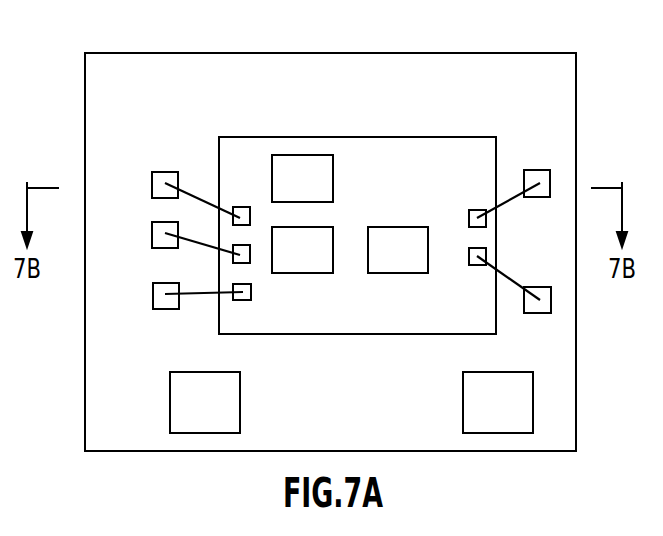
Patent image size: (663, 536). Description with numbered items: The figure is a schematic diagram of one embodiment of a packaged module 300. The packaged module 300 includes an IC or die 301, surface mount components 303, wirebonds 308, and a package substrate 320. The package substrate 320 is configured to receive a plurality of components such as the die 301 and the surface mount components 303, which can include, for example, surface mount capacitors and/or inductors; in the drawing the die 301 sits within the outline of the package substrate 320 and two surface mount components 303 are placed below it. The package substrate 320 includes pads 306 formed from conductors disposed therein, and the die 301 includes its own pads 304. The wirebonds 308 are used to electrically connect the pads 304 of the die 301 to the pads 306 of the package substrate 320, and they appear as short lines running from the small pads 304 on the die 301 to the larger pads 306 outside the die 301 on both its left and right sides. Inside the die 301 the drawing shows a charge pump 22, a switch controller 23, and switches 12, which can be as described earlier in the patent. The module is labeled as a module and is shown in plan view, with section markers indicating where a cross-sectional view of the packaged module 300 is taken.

The packaged module 300 is at (292, 53).
The package substrate 320 is at (480, 78).
The die 301 is at (278, 137).
The charge pump 22 is at (333, 181).
The switch controller 23 is at (305, 273).
The switches 12 is at (398, 273).
The surface mount components 303 is at (240, 403).
The pads 304 is at (477, 212).
The pads 306 is at (540, 197).
The wirebonds 308 is at (199, 197).